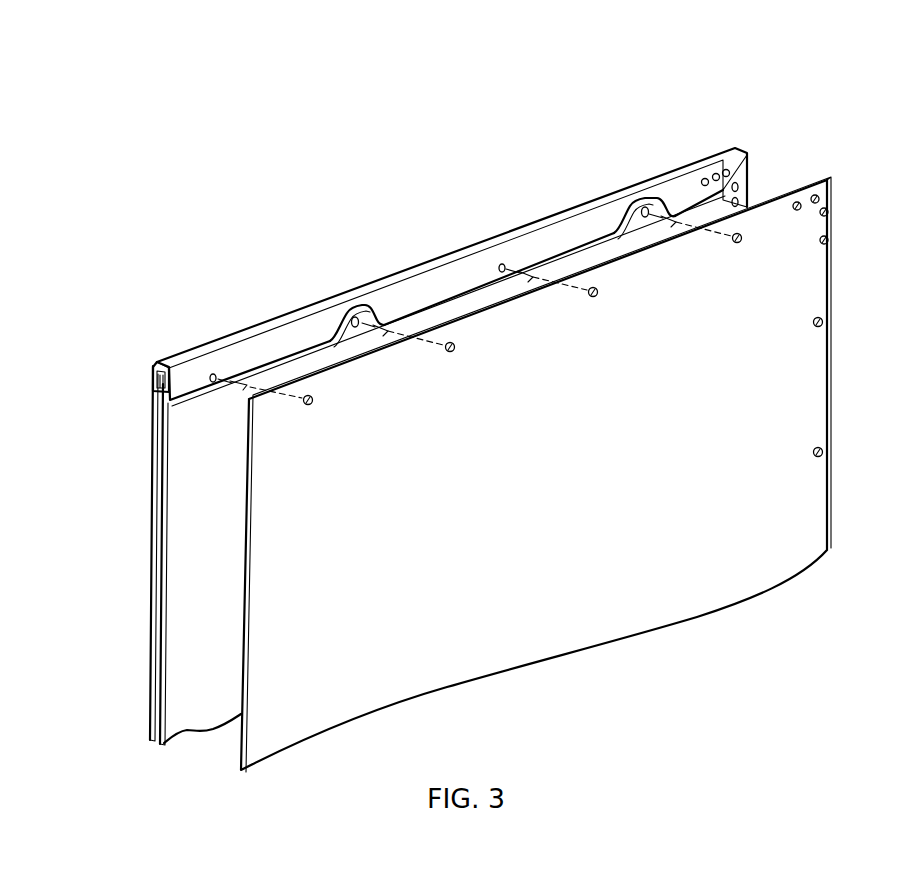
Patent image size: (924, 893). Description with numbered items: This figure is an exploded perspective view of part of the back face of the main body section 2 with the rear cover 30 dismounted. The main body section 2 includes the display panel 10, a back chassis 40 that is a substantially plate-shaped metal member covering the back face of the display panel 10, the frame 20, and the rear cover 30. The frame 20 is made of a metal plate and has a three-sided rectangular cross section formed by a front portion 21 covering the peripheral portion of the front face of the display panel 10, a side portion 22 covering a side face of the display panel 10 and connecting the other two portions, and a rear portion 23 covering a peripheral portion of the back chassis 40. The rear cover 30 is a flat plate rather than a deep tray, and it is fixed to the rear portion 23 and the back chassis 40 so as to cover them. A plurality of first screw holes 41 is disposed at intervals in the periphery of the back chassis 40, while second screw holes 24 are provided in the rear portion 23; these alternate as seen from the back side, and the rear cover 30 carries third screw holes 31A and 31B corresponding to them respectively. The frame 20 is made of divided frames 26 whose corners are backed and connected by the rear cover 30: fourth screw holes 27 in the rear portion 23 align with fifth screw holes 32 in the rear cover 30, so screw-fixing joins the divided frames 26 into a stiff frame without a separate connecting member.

The main body section 2 is at (831, 50).
The display panel 10 is at (152, 522).
The frame 20 is at (196, 227).
The front portion 21 is at (153, 373).
The side portion 22 is at (172, 362).
The rear portion 23 is at (188, 373).
The second screw holes 24 is at (213, 375).
The divided frames 26 is at (322, 305).
The fourth screw holes 27 is at (716, 174).
The rear cover 30 is at (830, 403).
The third screw holes 31A is at (450, 343).
The third screw holes 31B is at (309, 395).
The fifth screw holes 32 is at (829, 238).
The back chassis 40 is at (183, 572).
The first screw holes 41 is at (355, 318).